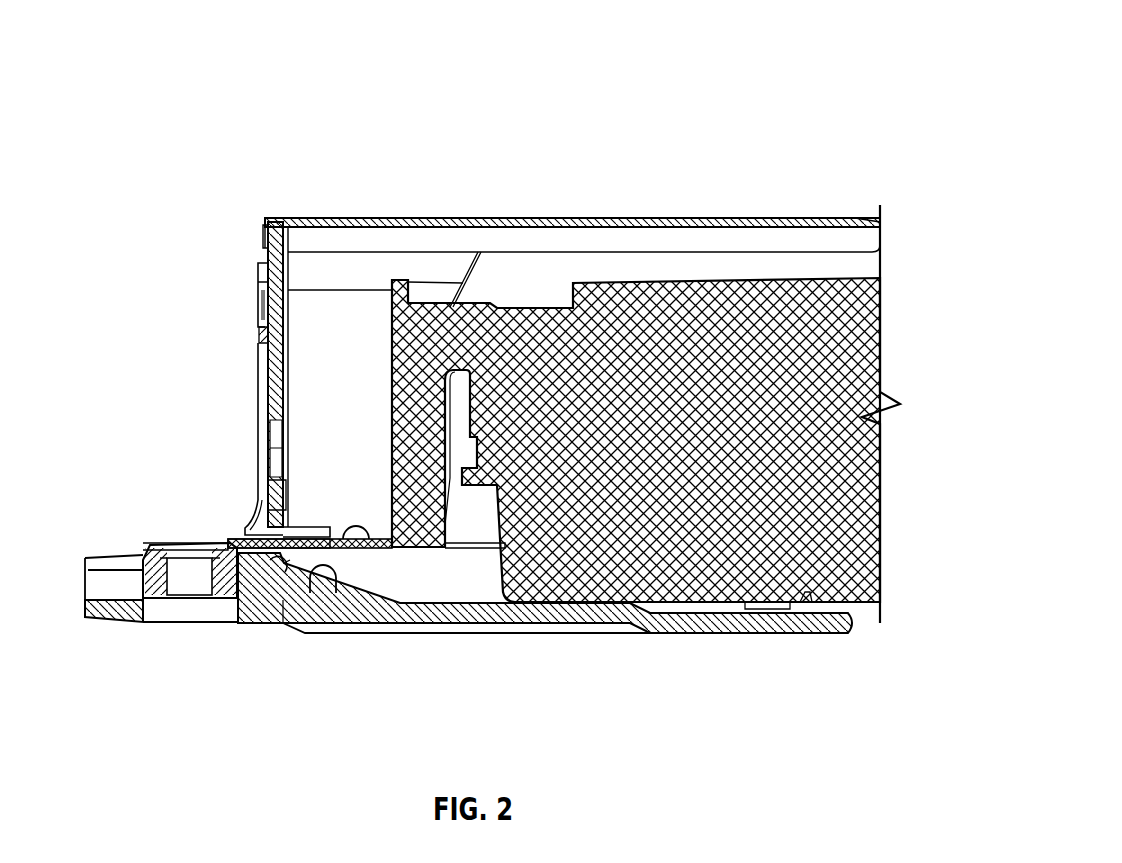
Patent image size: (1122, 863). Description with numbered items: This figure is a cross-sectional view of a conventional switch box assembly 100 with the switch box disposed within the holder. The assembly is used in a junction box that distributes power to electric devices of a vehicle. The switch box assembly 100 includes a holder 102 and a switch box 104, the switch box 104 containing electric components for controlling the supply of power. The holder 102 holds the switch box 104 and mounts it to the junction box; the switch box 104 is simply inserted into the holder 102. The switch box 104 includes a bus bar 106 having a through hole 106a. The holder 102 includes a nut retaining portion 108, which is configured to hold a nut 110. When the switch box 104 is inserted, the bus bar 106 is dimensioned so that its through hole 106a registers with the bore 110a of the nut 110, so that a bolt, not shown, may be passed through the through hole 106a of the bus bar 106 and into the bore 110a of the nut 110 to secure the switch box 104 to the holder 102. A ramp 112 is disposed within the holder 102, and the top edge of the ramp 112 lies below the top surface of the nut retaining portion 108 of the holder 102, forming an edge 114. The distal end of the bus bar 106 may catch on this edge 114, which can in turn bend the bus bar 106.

The switch box assembly 100 is at (709, 49).
The holder 102 is at (345, 218).
The switch box 104 is at (866, 364).
The bus bar 106 is at (367, 541).
The through hole 106a is at (306, 548).
The nut retaining portion 108 is at (80, 623).
The nut 110 is at (150, 548).
The bore 110a is at (201, 545).
The ramp 112 is at (328, 580).
The edge 114 is at (318, 546).